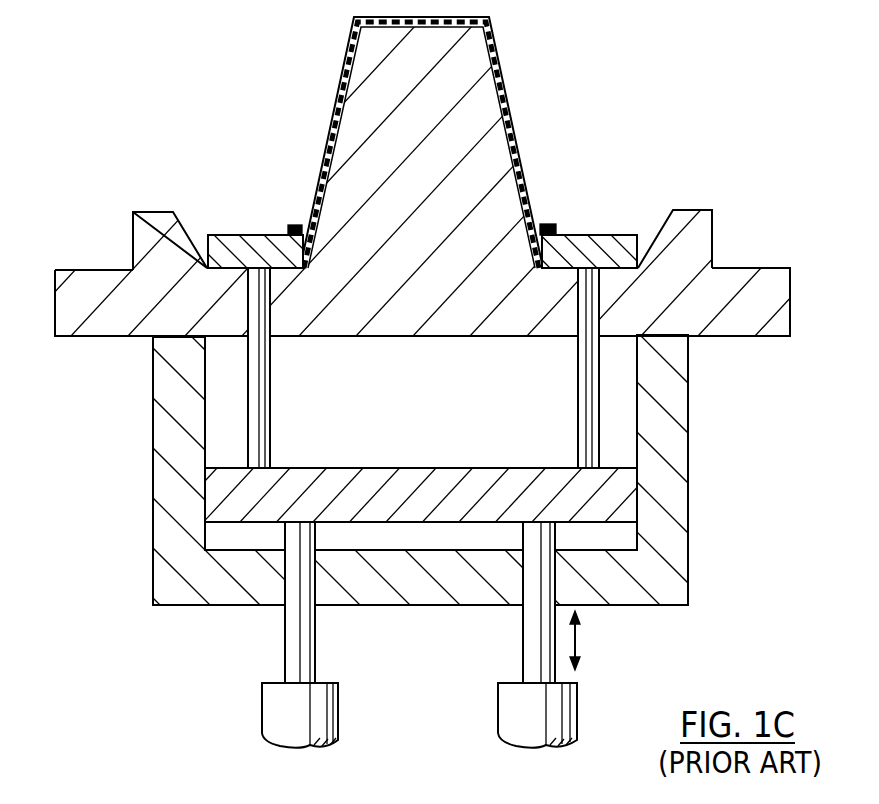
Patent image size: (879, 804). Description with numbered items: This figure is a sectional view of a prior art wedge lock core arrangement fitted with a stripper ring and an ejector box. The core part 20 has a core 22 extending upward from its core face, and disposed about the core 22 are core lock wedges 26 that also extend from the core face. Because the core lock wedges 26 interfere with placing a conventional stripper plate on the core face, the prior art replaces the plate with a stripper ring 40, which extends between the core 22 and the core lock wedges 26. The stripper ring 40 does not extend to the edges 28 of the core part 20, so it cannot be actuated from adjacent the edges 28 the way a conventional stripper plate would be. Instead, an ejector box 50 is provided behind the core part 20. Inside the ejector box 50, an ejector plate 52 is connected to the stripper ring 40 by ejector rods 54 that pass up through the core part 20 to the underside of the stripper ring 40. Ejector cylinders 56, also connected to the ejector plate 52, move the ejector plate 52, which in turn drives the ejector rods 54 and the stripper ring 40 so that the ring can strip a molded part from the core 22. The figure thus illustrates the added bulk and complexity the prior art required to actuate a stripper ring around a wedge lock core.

The core part 20 is at (439, 205).
The core 22 is at (475, 78).
The core lock wedges 26 is at (158, 220).
The edges 28 is at (55, 312).
The stripper ring 40 is at (602, 238).
The ejector box 50 is at (638, 625).
The ejector plate 52 is at (420, 477).
The ejector rods 54 is at (260, 381).
The ejector cylinders 56 is at (278, 702).